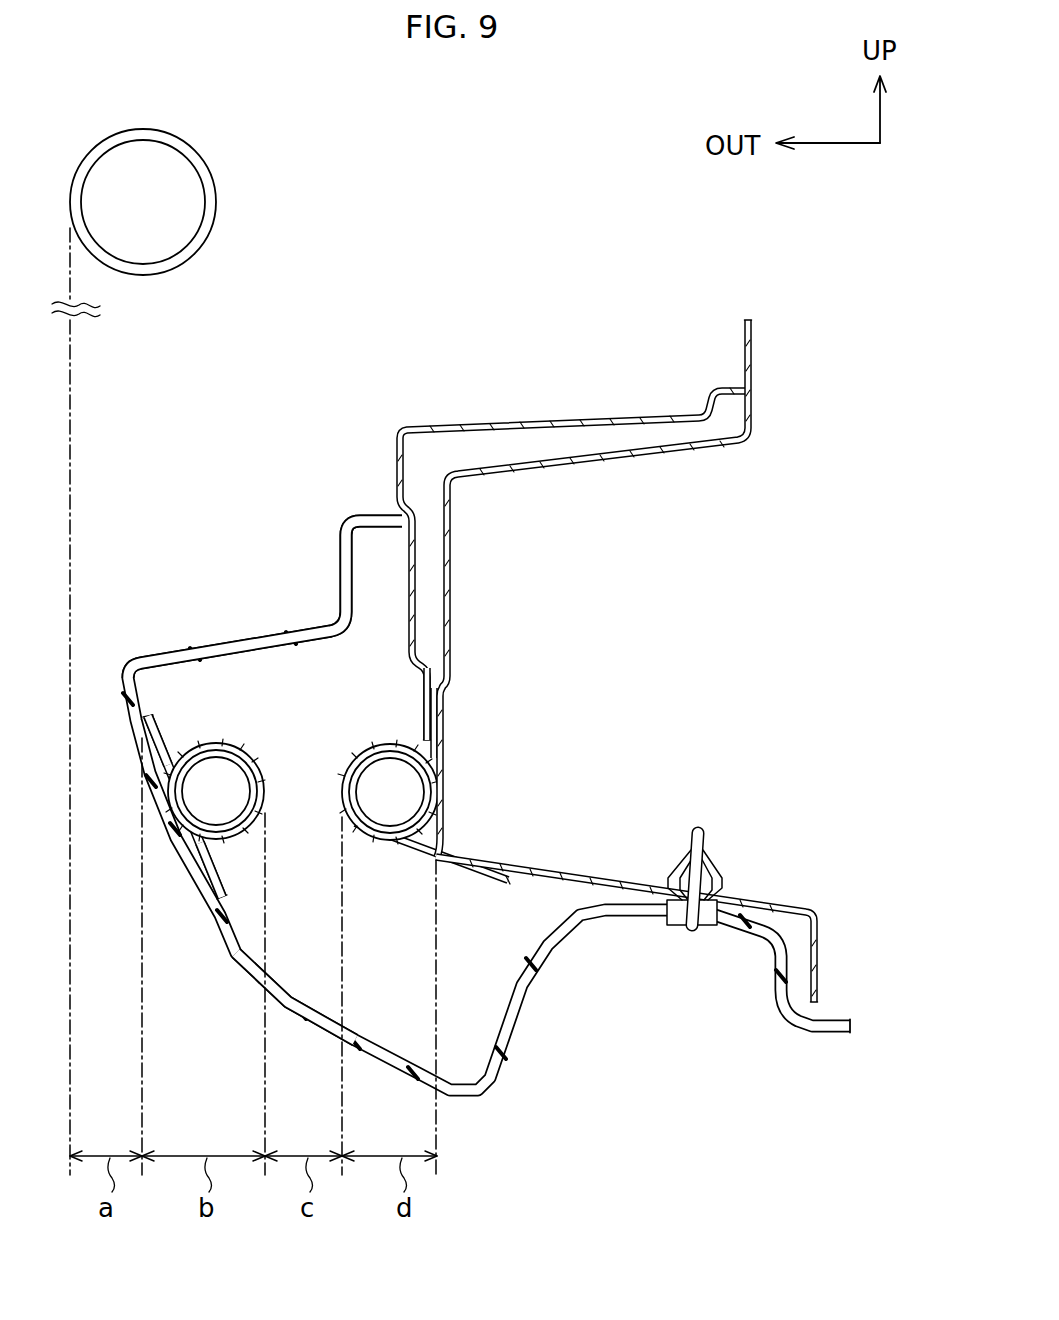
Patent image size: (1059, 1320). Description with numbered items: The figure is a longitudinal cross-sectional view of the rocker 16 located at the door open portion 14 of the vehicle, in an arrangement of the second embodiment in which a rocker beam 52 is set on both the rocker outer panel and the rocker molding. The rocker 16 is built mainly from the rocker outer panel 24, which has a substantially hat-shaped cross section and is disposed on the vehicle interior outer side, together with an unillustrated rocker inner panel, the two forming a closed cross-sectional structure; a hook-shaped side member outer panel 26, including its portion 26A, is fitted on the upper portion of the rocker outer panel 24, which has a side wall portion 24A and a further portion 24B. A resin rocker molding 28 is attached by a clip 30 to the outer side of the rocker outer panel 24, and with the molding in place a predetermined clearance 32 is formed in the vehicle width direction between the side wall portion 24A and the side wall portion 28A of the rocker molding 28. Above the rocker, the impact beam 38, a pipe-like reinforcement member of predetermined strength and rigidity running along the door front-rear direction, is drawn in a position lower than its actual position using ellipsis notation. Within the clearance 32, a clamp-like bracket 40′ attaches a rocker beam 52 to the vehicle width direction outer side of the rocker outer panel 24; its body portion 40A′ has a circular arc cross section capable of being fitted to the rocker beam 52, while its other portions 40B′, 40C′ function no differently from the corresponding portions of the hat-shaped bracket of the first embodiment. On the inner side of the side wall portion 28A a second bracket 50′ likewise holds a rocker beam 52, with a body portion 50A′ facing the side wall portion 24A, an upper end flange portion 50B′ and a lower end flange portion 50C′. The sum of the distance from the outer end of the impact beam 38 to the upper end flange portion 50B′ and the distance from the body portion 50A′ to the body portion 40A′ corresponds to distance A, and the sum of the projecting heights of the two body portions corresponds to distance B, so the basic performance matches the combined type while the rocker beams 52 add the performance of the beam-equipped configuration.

The door open portion 14 is at (566, 647).
The rocker 16 is at (465, 620).
The rocker outer panel 24 is at (594, 588).
The side wall portion 24A is at (453, 554).
The lower wall portion of inner panel 24B is at (592, 872).
The side member outer panel 26 is at (485, 411).
The lower end portion of plate 26 26A is at (424, 720).
The rocker molding 28 is at (219, 967).
The side wall portion 28A is at (251, 973).
The clip 30 is at (683, 920).
The clearance 32 is at (342, 799).
The impact beam 38 is at (215, 203).
The bracket 40′ is at (404, 814).
The body portion 40A′ is at (341, 791).
The upper arm of bracket 40′ 40B′ is at (435, 704).
The lower arm of bracket 40′ 40C′ is at (473, 875).
The bracket 50′ is at (243, 777).
The body portion 50A′ is at (263, 787).
The upper end flange portion 50B′ is at (153, 722).
The lower end flange portion 50C′ is at (228, 883).
The rocker beam 52 is at (178, 815).